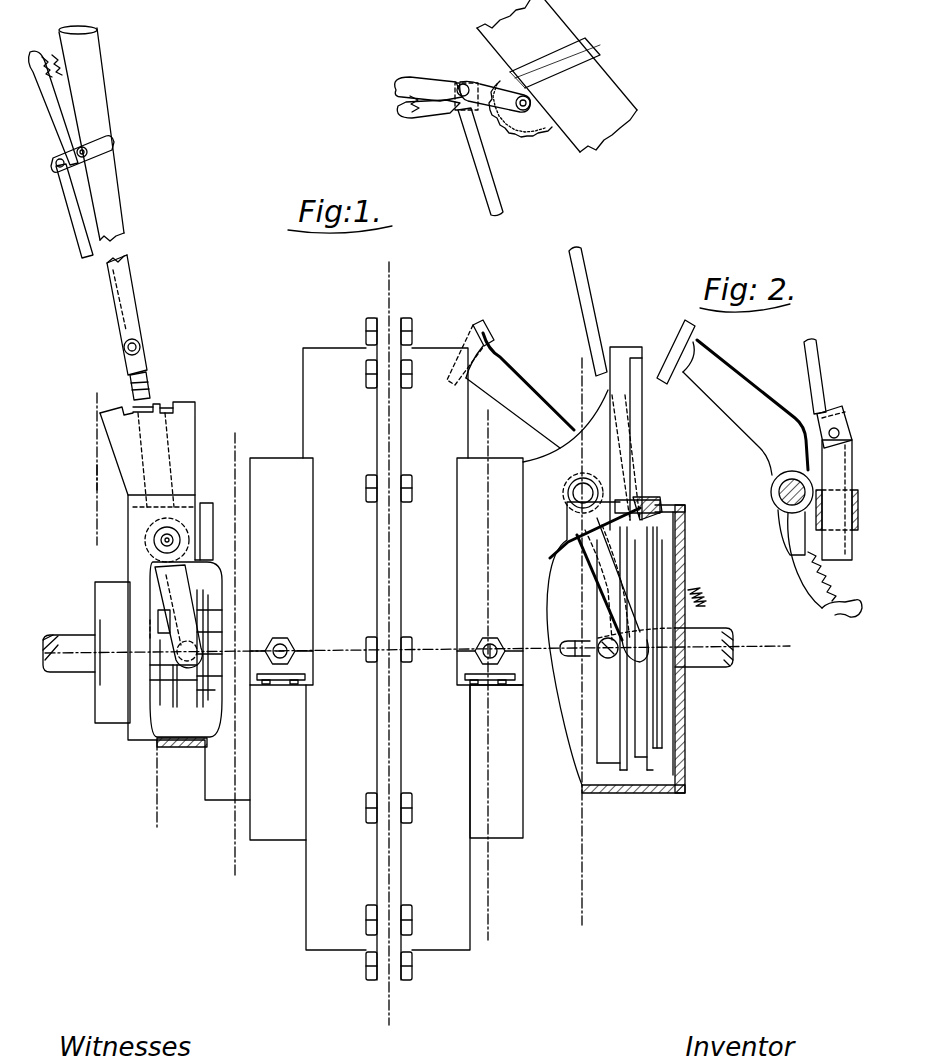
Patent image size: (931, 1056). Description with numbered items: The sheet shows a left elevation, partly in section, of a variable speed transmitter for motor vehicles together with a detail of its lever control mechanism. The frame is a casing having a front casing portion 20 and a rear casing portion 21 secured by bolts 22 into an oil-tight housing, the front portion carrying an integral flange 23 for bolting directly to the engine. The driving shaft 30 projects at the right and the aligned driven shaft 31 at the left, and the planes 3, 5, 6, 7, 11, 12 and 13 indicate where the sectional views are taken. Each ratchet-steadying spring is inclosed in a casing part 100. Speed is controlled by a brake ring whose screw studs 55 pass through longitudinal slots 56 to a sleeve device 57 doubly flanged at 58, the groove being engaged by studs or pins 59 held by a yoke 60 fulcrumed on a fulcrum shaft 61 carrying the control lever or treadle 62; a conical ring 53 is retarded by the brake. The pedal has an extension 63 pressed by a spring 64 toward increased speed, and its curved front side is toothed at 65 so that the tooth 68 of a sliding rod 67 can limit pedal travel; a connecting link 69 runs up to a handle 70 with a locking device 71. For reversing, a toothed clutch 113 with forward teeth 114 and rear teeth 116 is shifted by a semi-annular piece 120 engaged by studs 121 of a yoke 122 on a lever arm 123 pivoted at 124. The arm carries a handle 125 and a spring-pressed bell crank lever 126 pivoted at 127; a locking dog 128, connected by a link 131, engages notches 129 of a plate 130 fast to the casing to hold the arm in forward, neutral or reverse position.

In FIG. 1, the handle 125 is at (98, 62).
In FIG. 1, the bell crank lever 126 is at (53, 112).
In FIG. 1, the pivot 127 is at (86, 152).
In FIG. 1, the link 131 is at (105, 278).
In FIG. 1, the lever arm 123 is at (130, 259).
In FIG. 1, the locking dog 128 is at (143, 393).
In FIG. 1, the notches 129 is at (168, 405).
In FIG. 1, the plate 130 is at (196, 422).
In FIG. 1, the section plane 12— 12 is at (112, 405).
In FIG. 1, the section plane 11— 11 is at (250, 442).
In FIG. 1, the section plane 13— 13 is at (78, 478).
In FIG. 1, the pivot 124 is at (157, 540).
In FIG. 1, the yoke 122 is at (180, 580).
In FIG. 1, the clutch teeth 114 is at (215, 610).
In FIG. 1, the driven shaft 31 is at (60, 632).
In FIG. 1, the section plane 3— 3 is at (62, 638).
In FIG. 1, the studs 121 is at (168, 668).
In FIG. 1, the clutch teeth 116 is at (165, 683).
In FIG. 1, the semi-annular piece 120 is at (195, 680).
In FIG. 1, the toothed clutch 113 is at (208, 722).
In FIG. 1, the rear casing portion 21 is at (325, 352).
In FIG. 1, the bolts 22 is at (402, 318).
In FIG. 1, the front casing portion 20 is at (432, 354).
In FIG. 1, the section plane 5— 5 is at (402, 283).
In FIG. 1, the section plane 6— 6 is at (508, 422).
In FIG. 1, the section plane 7— 7 is at (597, 378).
In FIG. 1, the casing part 100 is at (308, 607).
In FIG. 1, the flange 23 is at (632, 344).
In FIG. 1, the connecting link 69 is at (503, 193).
In FIG. 2, the connecting link 69 is at (812, 374).
In FIG. 1, the fulcrum shaft 61 is at (572, 488).
In FIG. 2, the fulcrum shaft 61 is at (774, 484).
In FIG. 1, the control lever or treadle 62 is at (640, 462).
In FIG. 2, the control lever or treadle 62 is at (697, 330).
In FIG. 1, the ring 53 is at (634, 527).
In FIG. 1, the yoke 60 is at (658, 553).
In FIG. 1, the extension 63 is at (590, 582).
In FIG. 2, the extension 63 is at (808, 577).
In FIG. 1, the spring 64 is at (694, 590).
In FIG. 2, the spring 64 is at (860, 616).
In FIG. 1, the studs or pins 59 is at (680, 618).
In FIG. 1, the longitudinal slots 56 is at (570, 640).
In FIG. 1, the screw studs 55 is at (602, 652).
In FIG. 1, the driving shaft 30 is at (718, 668).
In FIG. 1, the sleeve device 57 is at (598, 742).
In FIG. 1, the flanges 58 is at (628, 772).
In FIG. 1, the handle 70 is at (425, 80).
In FIG. 1, the locking device 71 is at (497, 130).
In FIG. 2, the sliding rod 67 is at (823, 458).
In FIG. 2, the tooth 68 is at (800, 556).
In FIG. 2, the teeth 65 is at (831, 576).